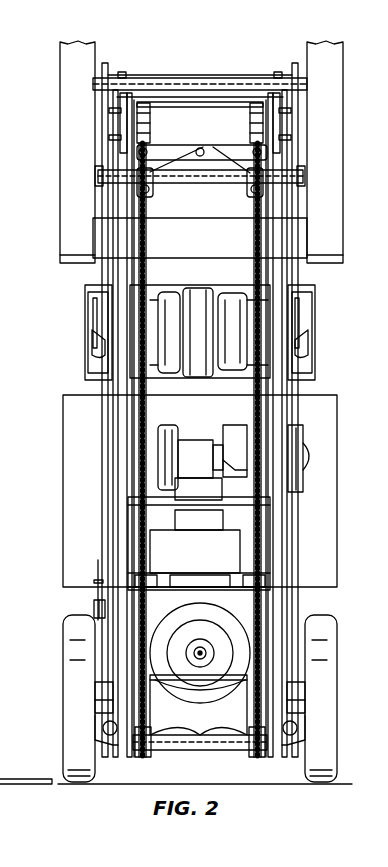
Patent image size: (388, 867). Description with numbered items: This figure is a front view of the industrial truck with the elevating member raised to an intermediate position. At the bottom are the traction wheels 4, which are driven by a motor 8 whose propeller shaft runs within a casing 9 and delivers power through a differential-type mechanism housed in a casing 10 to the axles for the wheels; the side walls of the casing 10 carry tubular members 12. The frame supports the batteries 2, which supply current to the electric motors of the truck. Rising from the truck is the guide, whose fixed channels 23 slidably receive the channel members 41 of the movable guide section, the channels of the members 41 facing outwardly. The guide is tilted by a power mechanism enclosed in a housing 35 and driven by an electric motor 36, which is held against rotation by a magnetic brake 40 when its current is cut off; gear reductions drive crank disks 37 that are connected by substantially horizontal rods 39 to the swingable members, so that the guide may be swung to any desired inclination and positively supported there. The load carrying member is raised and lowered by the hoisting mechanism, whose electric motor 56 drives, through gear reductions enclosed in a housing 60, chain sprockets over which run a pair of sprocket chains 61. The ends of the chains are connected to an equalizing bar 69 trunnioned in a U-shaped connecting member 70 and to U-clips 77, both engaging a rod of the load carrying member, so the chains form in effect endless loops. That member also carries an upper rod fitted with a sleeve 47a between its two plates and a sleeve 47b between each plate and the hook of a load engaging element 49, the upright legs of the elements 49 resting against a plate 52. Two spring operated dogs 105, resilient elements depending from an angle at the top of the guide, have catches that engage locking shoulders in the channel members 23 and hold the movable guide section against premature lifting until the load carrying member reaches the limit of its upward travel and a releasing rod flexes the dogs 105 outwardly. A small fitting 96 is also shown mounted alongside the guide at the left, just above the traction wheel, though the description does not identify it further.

The batteries 2 is at (191, 491).
The traction wheels 4 is at (63, 676).
The motor 8 is at (200, 653).
The casing 9 is at (212, 654).
The casing 10 is at (198, 705).
The tubular members 12 is at (103, 690).
The channels 23 is at (120, 465).
The housing 35 is at (210, 289).
The electric motor 36 is at (237, 297).
The crank disks 37 is at (305, 305).
The rods 39 is at (94, 352).
The magnetic brake 40 is at (177, 291).
The channel members 41 is at (110, 500).
The sleeve 47a is at (199, 80).
The sleeve 47b is at (303, 74).
The load engaging elements 49 is at (66, 244).
The plate 52 is at (200, 238).
The motor 56 is at (297, 433).
The housing 60 is at (197, 440).
The sprocket chains 61 is at (151, 114).
The equalizing bar 69 is at (168, 150).
The U-shaped connecting member 70 is at (213, 181).
The U-clips 77 is at (148, 178).
The valve 96 is at (94, 608).
The spring operated dogs 105 is at (112, 112).